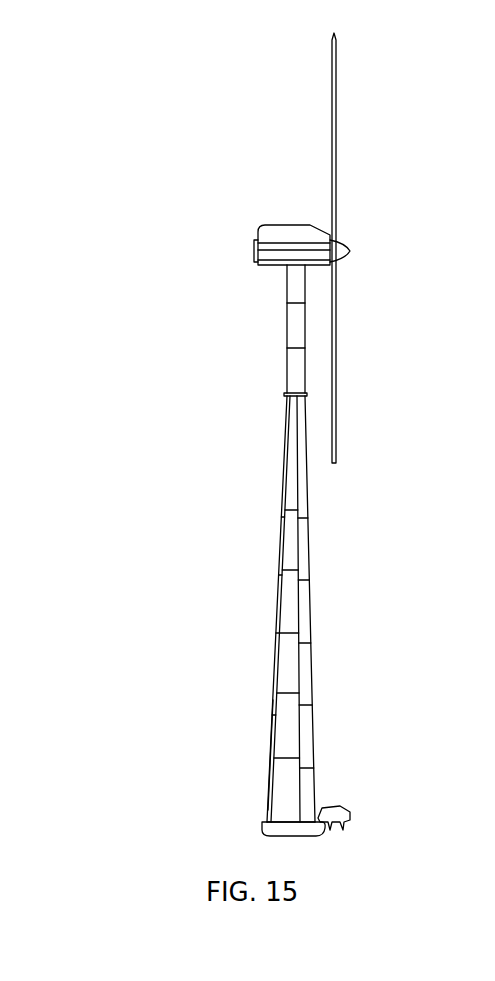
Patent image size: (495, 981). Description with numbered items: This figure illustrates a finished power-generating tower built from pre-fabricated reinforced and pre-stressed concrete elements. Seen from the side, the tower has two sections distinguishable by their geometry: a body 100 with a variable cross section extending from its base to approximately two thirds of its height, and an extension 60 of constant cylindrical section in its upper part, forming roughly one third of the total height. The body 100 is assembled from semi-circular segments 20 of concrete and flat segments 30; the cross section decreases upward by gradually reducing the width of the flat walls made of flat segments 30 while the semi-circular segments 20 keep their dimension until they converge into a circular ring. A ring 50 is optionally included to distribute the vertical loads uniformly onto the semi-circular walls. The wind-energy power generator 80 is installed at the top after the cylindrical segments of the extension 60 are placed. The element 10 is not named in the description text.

The body 100 is at (310, 560).
The wind-energy power generator 80 is at (257, 233).
The extension 60 is at (297, 322).
The ring 50 is at (284, 395).
The flat segments 30 is at (290, 592).
The semi-circular segments 20 is at (272, 715).
The base 10 is at (262, 827).